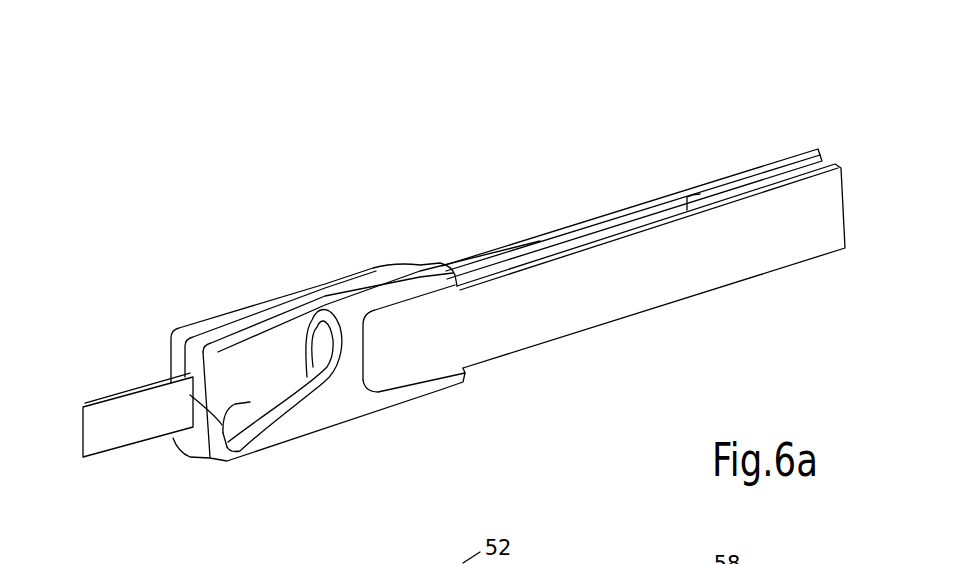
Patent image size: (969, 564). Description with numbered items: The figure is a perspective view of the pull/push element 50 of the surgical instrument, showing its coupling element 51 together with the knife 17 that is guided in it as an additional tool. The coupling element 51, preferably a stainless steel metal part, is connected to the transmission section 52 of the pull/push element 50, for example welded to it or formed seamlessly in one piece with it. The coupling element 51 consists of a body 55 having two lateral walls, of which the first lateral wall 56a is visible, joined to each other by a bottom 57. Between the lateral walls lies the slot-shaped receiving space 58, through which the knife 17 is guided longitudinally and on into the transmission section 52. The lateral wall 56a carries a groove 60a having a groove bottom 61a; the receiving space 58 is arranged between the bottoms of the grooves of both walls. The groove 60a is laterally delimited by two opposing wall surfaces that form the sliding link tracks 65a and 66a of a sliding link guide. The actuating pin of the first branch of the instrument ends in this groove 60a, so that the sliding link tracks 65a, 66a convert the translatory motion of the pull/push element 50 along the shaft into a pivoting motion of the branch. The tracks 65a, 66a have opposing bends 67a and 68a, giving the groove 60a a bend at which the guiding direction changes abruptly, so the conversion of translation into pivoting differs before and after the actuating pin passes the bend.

The pull/push element 50 is at (488, 126).
The transmission section 52 is at (572, 197).
The knife 17 is at (110, 395).
The coupling element 51 is at (320, 258).
The body 55 is at (260, 392).
The first lateral wall 56a is at (247, 310).
The bottom 57 is at (197, 450).
The receiving space 58 is at (263, 292).
The groove 60a is at (272, 420).
The groove bottom 61a is at (285, 380).
The sliding link track 65a is at (168, 377).
The sliding link track 66a is at (322, 306).
The bend 67a is at (284, 352).
The bend 68a is at (348, 400).